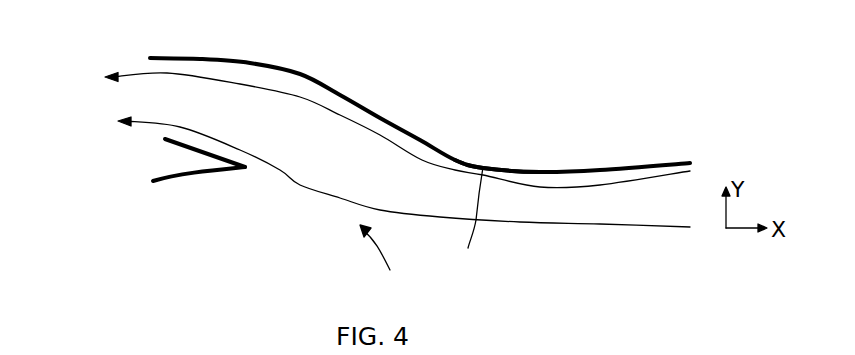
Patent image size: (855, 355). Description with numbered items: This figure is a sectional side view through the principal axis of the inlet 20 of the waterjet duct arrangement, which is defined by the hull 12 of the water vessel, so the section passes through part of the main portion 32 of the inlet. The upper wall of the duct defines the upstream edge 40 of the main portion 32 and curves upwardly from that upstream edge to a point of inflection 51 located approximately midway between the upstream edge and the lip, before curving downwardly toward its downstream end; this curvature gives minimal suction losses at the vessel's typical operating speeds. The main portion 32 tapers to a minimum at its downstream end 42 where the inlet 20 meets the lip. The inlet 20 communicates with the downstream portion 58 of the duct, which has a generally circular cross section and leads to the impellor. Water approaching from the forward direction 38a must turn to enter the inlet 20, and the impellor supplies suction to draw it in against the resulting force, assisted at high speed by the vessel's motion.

The hull 12 is at (297, 71).
The downstream portion 58 is at (124, 92).
The point of inflection 51 is at (355, 97).
The main portion 32 is at (375, 158).
The forward direction 38a is at (603, 225).
The downstream end 42 is at (246, 168).
The upstream end 40 is at (470, 222).
The inlet 20 is at (382, 260).